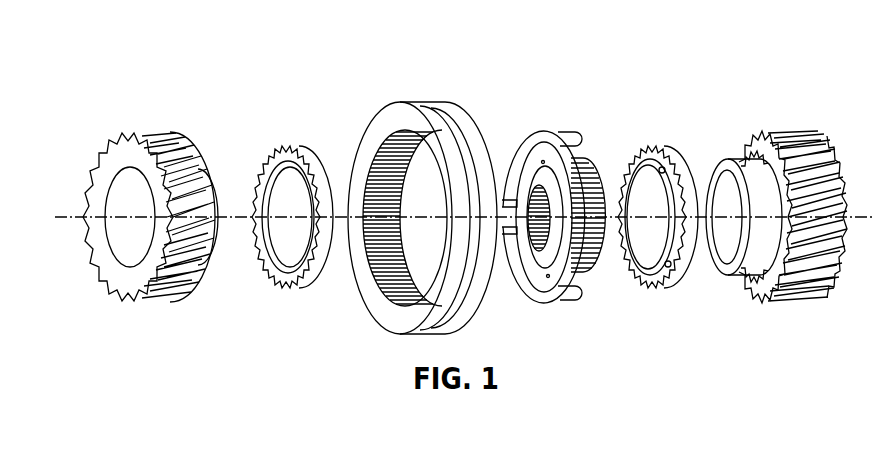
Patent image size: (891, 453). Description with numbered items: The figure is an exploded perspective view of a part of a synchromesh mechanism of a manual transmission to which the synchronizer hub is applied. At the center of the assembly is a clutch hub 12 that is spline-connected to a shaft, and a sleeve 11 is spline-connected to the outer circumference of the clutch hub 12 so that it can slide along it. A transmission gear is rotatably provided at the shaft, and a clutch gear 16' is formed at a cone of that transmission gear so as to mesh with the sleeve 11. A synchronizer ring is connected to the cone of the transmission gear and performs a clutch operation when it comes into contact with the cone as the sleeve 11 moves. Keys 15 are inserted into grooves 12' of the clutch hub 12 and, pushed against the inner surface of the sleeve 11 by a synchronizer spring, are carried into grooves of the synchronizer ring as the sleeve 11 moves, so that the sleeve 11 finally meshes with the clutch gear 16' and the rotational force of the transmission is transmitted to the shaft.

The sleeve 11 is at (407, 115).
The clutch hub 12 is at (543, 157).
The grooves 12' is at (583, 156).
The keys 15 is at (663, 143).
The clutch gear 16' is at (756, 147).